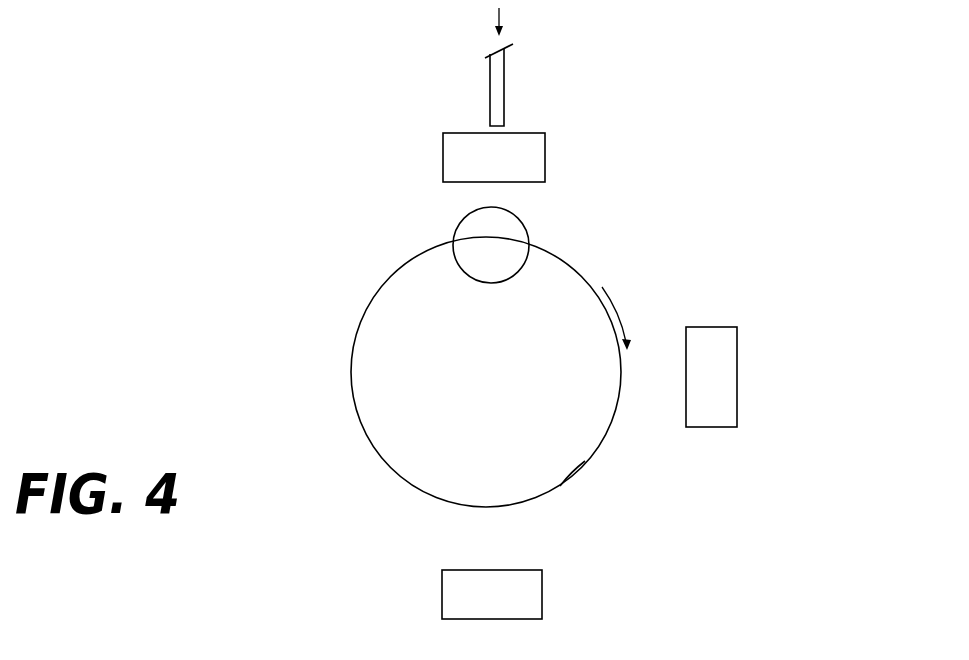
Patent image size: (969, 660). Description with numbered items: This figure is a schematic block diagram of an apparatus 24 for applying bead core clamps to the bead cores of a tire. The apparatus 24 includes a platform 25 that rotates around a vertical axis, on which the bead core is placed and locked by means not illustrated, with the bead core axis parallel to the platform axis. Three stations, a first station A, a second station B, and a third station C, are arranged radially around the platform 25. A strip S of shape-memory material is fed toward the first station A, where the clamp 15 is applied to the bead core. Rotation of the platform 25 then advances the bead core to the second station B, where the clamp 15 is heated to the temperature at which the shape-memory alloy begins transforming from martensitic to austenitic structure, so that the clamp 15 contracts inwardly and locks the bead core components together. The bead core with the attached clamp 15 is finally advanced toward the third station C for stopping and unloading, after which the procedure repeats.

The strip S is at (506, 97).
The first station A is at (537, 163).
The bead core clamp 15 is at (528, 240).
The apparatus 24 is at (388, 477).
The platform 25 is at (573, 475).
The second station B is at (722, 365).
The third station C is at (527, 600).